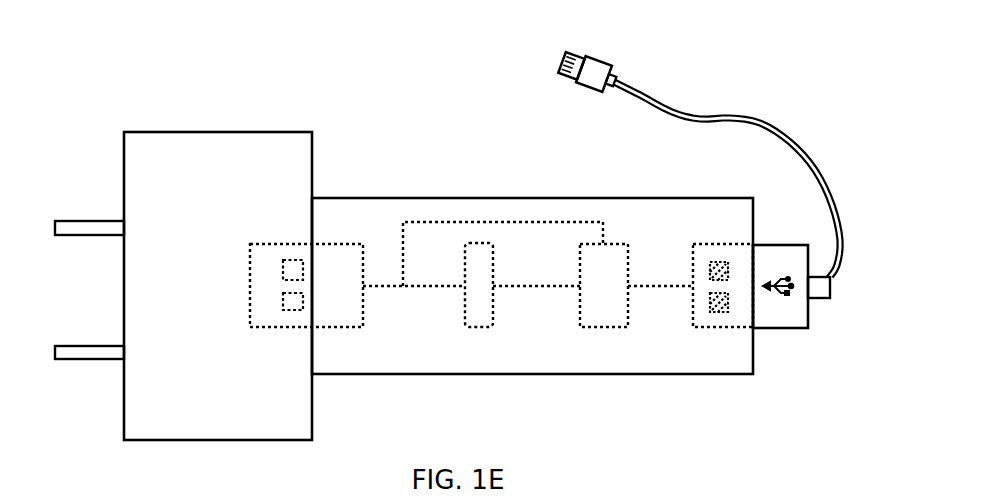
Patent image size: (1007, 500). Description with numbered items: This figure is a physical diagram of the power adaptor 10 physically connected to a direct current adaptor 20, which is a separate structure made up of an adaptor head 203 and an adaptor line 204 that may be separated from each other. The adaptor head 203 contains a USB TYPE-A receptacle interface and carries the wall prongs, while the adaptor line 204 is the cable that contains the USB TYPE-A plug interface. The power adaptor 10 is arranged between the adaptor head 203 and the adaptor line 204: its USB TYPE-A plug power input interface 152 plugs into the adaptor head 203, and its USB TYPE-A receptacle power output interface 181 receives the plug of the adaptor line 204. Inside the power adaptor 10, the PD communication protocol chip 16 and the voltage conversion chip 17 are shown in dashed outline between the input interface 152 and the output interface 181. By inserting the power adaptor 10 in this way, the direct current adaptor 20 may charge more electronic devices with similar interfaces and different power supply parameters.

The power adaptor 10 is at (388, 167).
The PD communication protocol chip 16 is at (580, 318).
The voltage conversion chip 17 is at (465, 315).
The direct current adaptor 20 is at (503, 254).
The USB TYPE-A plug power input interface 152 is at (250, 290).
The USB TYPE-A receptacle power output interface 181 is at (693, 292).
The adaptor head 203 is at (217, 132).
The adaptor line 204 is at (646, 92).